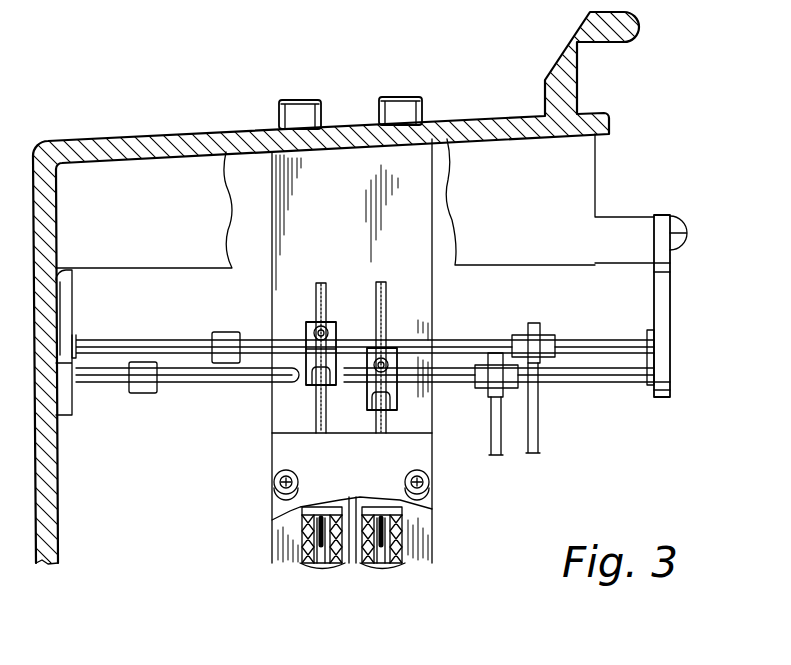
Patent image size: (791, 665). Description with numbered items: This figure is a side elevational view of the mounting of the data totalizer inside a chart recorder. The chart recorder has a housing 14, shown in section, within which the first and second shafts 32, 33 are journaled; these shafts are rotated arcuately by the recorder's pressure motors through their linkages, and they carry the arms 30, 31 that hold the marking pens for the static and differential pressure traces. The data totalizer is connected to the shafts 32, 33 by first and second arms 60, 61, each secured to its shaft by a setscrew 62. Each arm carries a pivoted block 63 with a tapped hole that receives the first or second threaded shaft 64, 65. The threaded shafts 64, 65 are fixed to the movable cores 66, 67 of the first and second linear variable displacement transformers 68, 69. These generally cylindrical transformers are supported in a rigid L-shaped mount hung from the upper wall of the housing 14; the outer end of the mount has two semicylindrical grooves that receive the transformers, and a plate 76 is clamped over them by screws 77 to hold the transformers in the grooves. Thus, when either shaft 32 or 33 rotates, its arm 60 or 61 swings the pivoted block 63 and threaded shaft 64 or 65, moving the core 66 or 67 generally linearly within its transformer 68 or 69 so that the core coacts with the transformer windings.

The housing 14 is at (448, 128).
The arm 30 is at (504, 443).
The arm 31 is at (538, 418).
The first shaft 32 is at (606, 383).
The second shaft 33 is at (571, 342).
The first arm 60 is at (385, 349).
The second arm 61 is at (326, 351).
The setscrew 62 is at (316, 331).
The pivoted block 63 is at (314, 387).
The first threaded shaft 64 is at (379, 283).
The second threaded shaft 65 is at (320, 283).
The movable core 66 is at (423, 557).
The movable core 67 is at (297, 558).
The first linear variable displacement transformer 68 is at (386, 566).
The second linear variable displacement transformer 69 is at (320, 568).
The plate 76 is at (424, 452).
The screw 77 is at (436, 470).